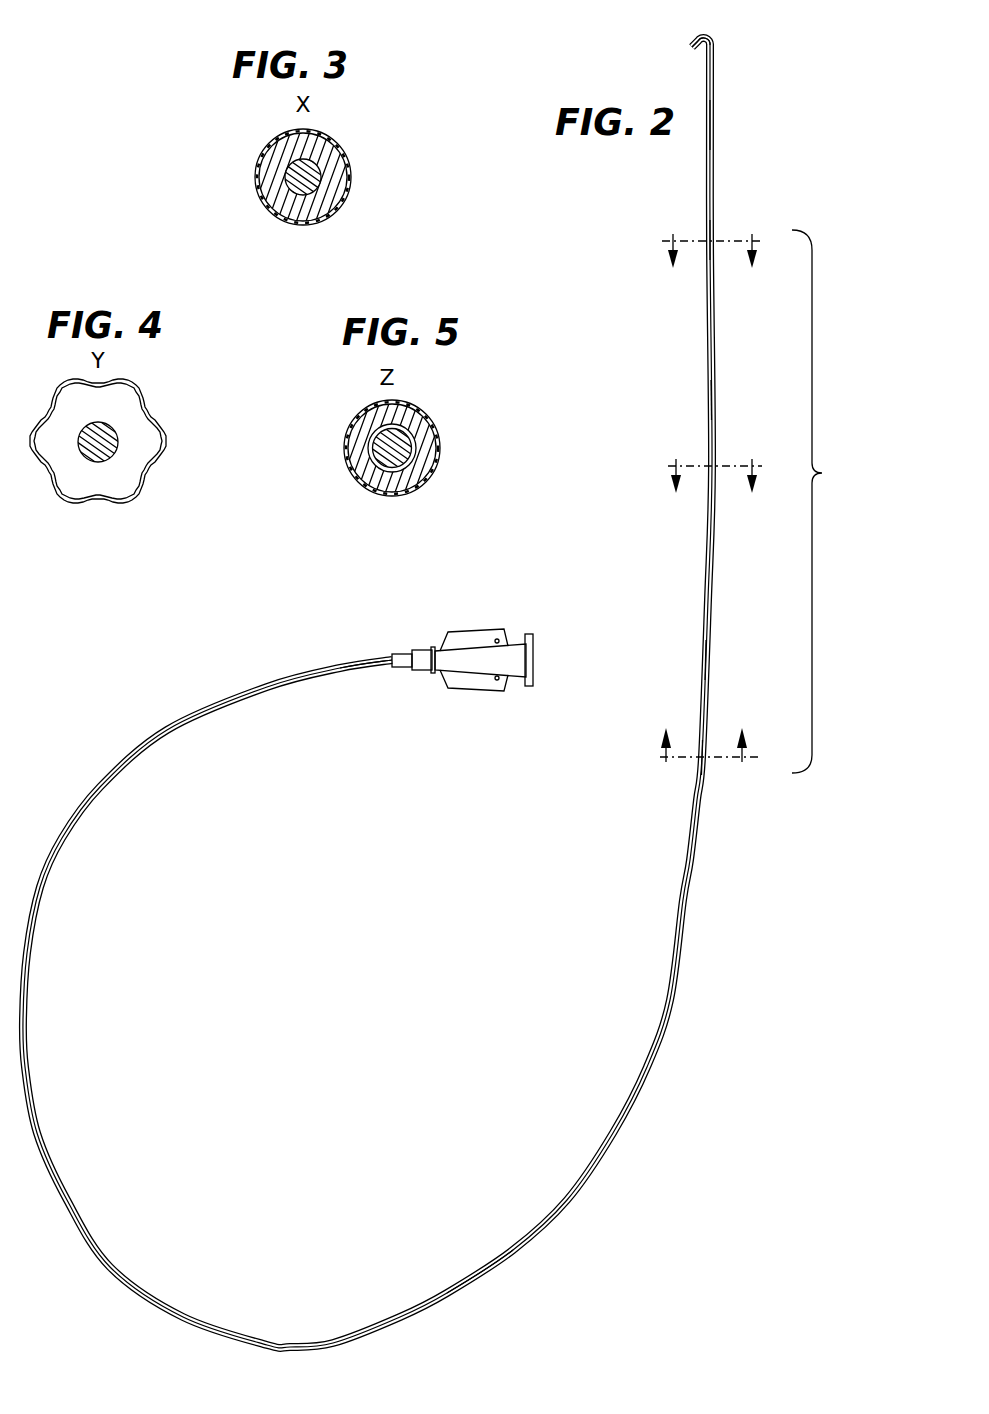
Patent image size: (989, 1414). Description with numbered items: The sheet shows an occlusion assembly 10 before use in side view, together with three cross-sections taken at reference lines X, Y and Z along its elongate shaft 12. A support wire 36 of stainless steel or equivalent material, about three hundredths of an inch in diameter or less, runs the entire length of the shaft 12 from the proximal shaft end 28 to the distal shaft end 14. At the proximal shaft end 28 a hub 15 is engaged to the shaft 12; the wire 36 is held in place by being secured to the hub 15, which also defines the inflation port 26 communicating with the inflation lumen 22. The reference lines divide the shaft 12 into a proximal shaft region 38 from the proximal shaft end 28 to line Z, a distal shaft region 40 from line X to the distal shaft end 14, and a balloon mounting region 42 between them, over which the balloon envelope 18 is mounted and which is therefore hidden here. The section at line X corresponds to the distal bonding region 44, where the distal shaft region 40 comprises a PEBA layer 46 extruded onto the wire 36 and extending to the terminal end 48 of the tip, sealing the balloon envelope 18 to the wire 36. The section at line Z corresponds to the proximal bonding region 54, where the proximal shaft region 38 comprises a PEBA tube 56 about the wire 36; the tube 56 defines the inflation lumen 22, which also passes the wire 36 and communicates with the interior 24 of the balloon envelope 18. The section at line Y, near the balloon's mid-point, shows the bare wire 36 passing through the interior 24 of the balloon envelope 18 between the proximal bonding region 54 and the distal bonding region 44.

In FIG. 2, the occlusion assembly 10 is at (170, 666).
In FIG. 2, the elongate shaft 12 is at (693, 888).
In FIG. 2, the distal shaft end 14 is at (708, 30).
In FIG. 2, the hub 15 is at (497, 655).
In FIG. 2, the balloon envelope 18 is at (705, 400).
In FIG. 3, the balloon envelope 18 is at (350, 178).
In FIG. 4, the balloon envelope 18 is at (123, 453).
In FIG. 5, the balloon envelope 18 is at (410, 408).
In FIG. 5, the inflation lumen 22 is at (413, 430).
In FIG. 4, the interior of the balloon envelope 24 is at (133, 450).
In FIG. 2, the inflation port 26 is at (538, 654).
In FIG. 2, the proximal shaft end 28 is at (390, 668).
In FIG. 2, the support wire 36 is at (703, 657).
In FIG. 3, the support wire 36 is at (297, 178).
In FIG. 4, the support wire 36 is at (105, 433).
In FIG. 5, the support wire 36 is at (398, 450).
In FIG. 2, the proximal shaft region 38 is at (426, 935).
In FIG. 5, the proximal shaft region 38 is at (417, 448).
In FIG. 2, the distal shaft region 40 is at (766, 125).
In FIG. 3, the distal shaft region 40 is at (269, 177).
In FIG. 2, the balloon mounting region 42 is at (829, 501).
In FIG. 2, the distal bonding region 44 is at (713, 240).
In FIG. 3, the distal bonding region 44 is at (293, 177).
In FIG. 2, the PEBA layer 46 is at (714, 127).
In FIG. 3, the PEBA layer 46 is at (272, 165).
In FIG. 2, the terminal end 48 is at (690, 43).
In FIG. 2, the proximal bonding region 54 is at (700, 755).
In FIG. 5, the proximal bonding region 54 is at (397, 448).
In FIG. 2, the PEBA tube 56 is at (492, 1262).
In FIG. 5, the PEBA tube 56 is at (405, 480).